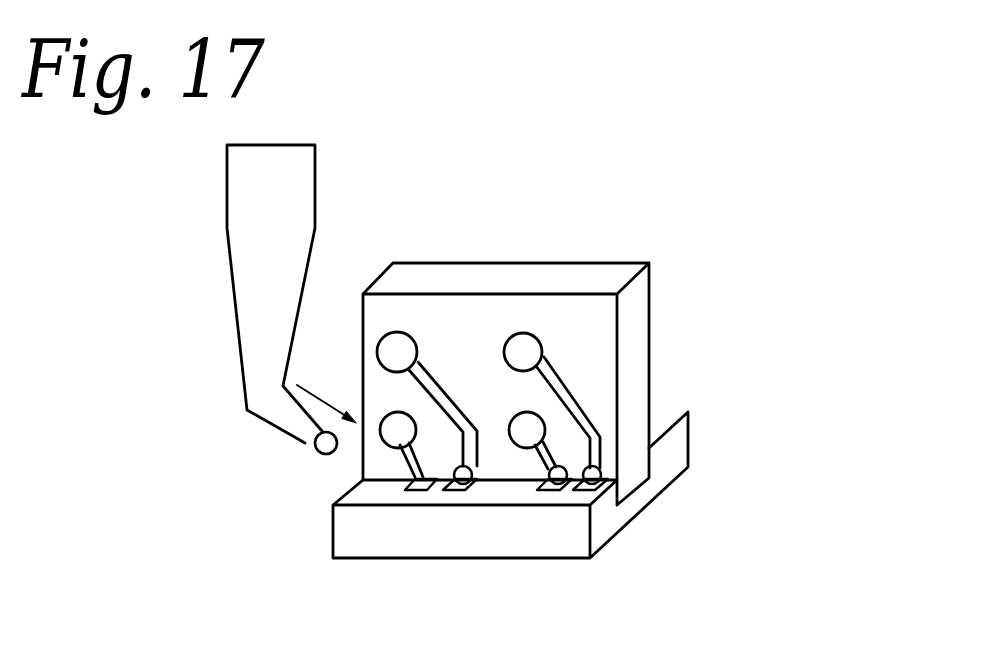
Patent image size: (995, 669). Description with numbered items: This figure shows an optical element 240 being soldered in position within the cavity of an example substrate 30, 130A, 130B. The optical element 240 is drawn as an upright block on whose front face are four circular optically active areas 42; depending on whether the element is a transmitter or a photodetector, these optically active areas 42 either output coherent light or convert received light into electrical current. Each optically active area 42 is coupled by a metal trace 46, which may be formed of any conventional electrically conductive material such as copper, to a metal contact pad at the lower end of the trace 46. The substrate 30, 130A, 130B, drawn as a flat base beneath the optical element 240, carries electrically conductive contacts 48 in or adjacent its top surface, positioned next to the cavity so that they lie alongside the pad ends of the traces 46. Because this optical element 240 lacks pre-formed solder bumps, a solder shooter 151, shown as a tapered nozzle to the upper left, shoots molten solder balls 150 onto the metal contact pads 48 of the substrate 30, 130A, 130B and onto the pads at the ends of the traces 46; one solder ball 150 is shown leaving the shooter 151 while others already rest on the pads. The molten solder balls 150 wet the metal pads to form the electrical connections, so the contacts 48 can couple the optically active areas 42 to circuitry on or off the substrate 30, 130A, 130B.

The solder shooter 151 is at (315, 195).
The molten solder balls 150 is at (317, 440).
The optically active areas 42 is at (518, 348).
The optical element 240 is at (588, 263).
The metal traces 46 is at (556, 448).
The electrically conductive contacts 48 is at (405, 486).
The substrate 30 is at (607, 519).
The substrate 130A is at (607, 519).
The substrate 130B is at (611, 542).